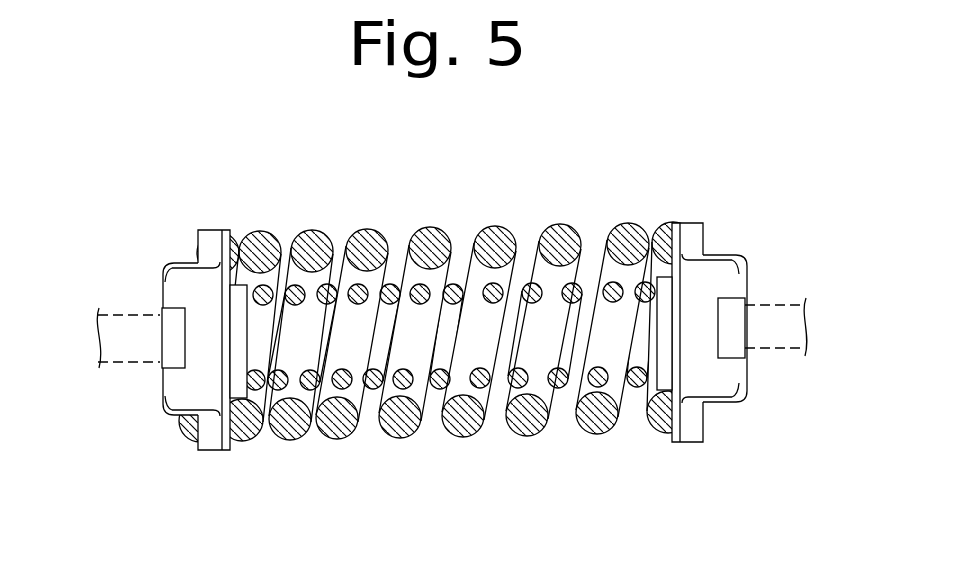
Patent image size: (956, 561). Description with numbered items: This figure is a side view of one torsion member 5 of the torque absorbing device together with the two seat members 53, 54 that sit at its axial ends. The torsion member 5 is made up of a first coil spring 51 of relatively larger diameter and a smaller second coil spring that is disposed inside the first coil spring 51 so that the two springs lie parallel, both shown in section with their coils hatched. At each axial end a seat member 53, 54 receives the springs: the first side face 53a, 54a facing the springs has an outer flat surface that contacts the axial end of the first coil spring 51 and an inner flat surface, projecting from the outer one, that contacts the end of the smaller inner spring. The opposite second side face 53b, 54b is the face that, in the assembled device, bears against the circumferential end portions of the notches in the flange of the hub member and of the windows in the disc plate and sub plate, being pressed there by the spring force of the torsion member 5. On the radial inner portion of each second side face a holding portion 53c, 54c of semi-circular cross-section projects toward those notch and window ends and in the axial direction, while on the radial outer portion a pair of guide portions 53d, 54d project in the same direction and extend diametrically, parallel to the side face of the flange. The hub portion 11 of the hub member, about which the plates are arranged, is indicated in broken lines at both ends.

The torsion member 5 is at (398, 231).
The hub portion 11 is at (100, 337).
The first coil spring 51 is at (560, 243).
The seat member 53 is at (194, 245).
The first side face 53a is at (248, 447).
The second side face 53b is at (200, 435).
The holding portion 53c is at (165, 410).
The guide portion 53d is at (182, 290).
The seat member 54 is at (689, 220).
The first side face 54a is at (685, 298).
The second side face 54b is at (708, 422).
The holding portion 54c is at (740, 395).
The guide portion 54d is at (720, 375).